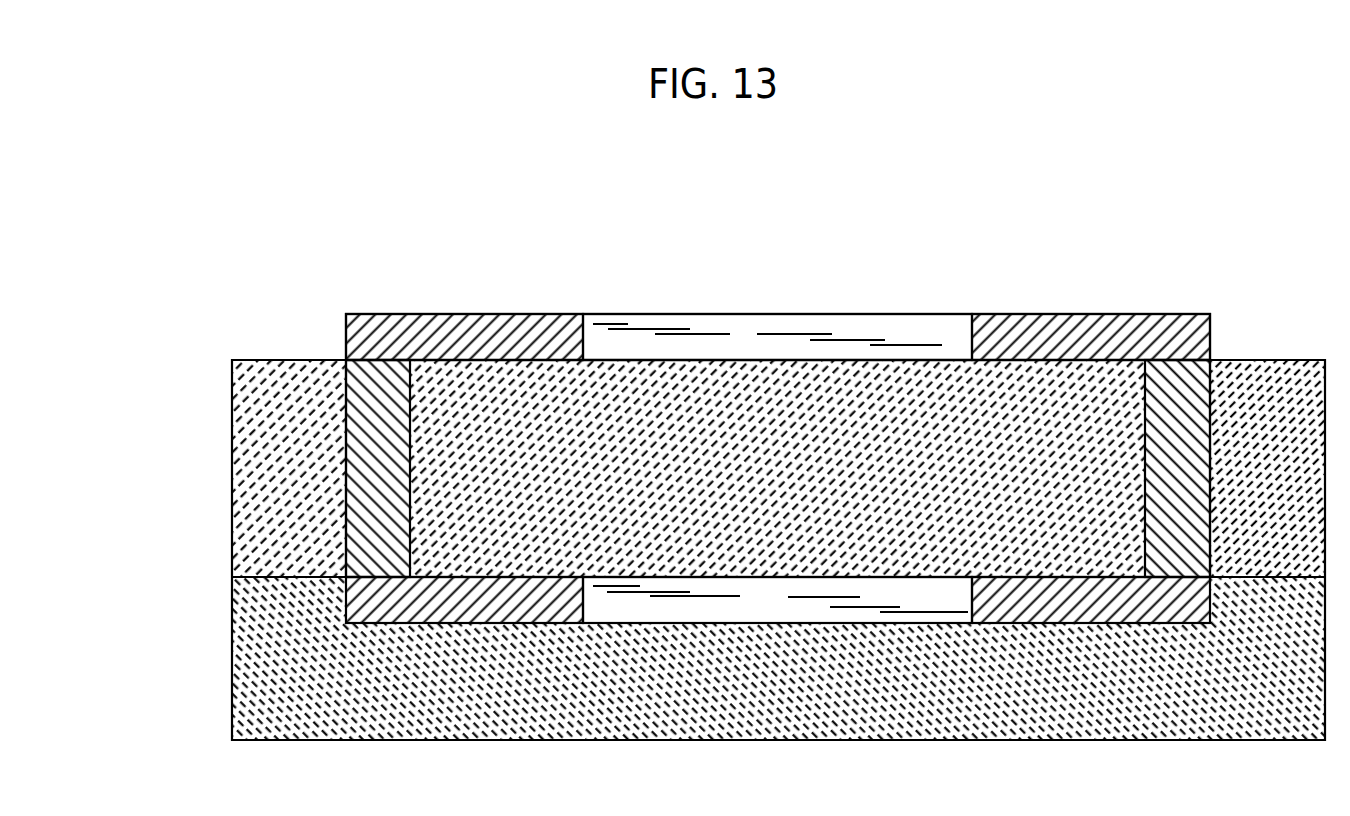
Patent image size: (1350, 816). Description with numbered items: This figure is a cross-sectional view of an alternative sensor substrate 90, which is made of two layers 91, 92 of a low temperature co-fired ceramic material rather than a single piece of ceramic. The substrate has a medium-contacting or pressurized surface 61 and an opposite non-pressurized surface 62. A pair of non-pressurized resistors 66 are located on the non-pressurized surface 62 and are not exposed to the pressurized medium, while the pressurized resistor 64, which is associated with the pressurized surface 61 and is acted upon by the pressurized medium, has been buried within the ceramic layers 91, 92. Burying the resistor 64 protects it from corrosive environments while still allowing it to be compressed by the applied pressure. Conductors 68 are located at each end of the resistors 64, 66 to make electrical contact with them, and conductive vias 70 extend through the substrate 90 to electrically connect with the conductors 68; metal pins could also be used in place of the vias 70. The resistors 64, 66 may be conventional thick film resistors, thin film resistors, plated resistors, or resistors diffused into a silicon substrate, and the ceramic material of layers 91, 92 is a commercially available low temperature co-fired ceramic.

The pressurized surface 61 is at (273, 577).
The non-pressurized surface 62 is at (282, 358).
The pressurized resistors 64 is at (810, 623).
The non-pressurized resistors 66 is at (835, 314).
The conductors 68 is at (459, 313).
The conductive vias 70 is at (411, 470).
The sensor substrate 90 is at (230, 577).
The ceramic layer 91 is at (256, 463).
The ceramic layer 92 is at (260, 698).